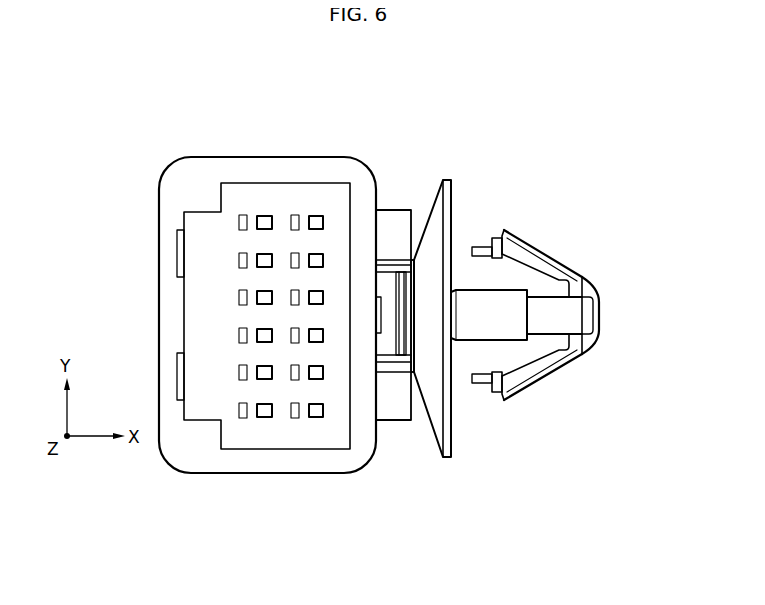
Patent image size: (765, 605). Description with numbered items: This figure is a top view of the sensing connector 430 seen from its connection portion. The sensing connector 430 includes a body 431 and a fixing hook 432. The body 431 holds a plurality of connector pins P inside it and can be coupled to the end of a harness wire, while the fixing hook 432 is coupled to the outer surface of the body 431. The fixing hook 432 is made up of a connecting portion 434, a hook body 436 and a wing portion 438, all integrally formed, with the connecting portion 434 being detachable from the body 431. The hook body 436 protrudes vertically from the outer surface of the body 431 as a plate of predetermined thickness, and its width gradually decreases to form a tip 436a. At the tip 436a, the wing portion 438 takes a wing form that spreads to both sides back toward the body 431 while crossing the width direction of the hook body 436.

The sensing connector 430 is at (213, 78).
The body 431 is at (323, 153).
The fixing hook 432 is at (521, 200).
The connecting portion 434 is at (433, 222).
The hook body 436 is at (486, 311).
The tip 436a is at (588, 313).
The wing portion 438 is at (550, 248).
The connector pins P is at (265, 417).